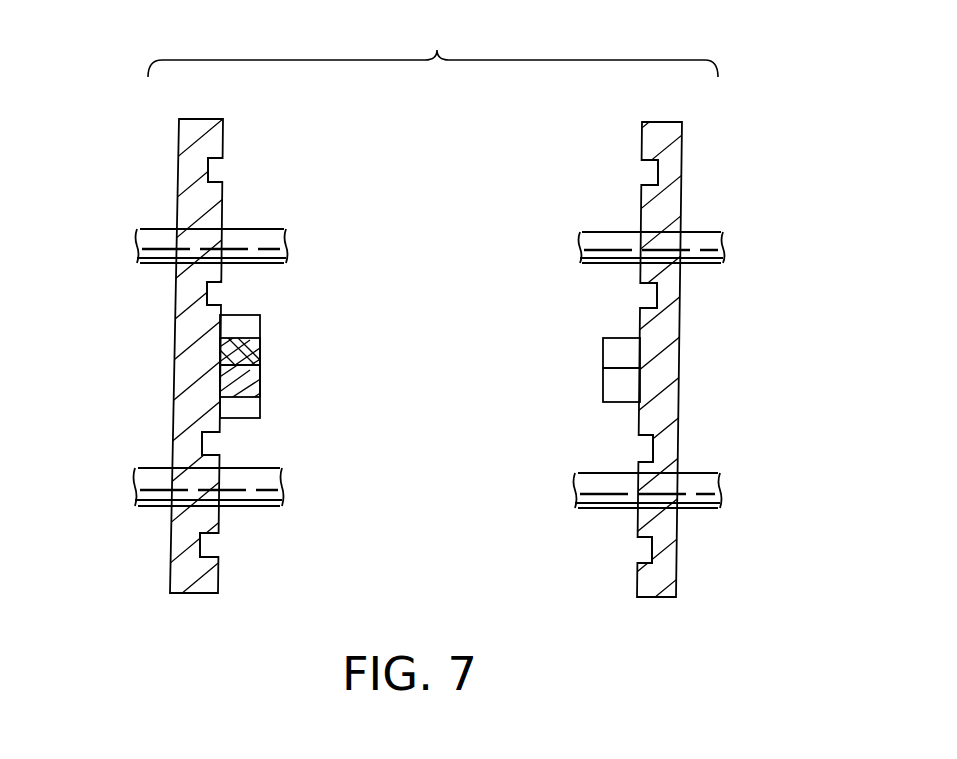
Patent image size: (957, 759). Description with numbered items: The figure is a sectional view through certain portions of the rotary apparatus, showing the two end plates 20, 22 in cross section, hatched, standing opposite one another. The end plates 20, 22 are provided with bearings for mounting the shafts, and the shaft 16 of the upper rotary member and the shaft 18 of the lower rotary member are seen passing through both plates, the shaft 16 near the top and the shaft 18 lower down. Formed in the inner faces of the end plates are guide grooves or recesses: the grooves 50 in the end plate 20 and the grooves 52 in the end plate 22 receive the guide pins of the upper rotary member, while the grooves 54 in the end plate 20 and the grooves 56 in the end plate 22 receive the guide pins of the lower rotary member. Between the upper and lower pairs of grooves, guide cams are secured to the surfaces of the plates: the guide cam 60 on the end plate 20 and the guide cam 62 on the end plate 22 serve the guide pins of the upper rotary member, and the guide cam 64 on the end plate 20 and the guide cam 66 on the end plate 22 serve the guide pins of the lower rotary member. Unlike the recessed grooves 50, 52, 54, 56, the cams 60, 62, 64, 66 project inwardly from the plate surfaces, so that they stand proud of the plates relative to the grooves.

The shaft 16 is at (158, 237).
The shaft 18 is at (152, 478).
The end plate 20 is at (672, 135).
The end plate 22 is at (190, 148).
The guide groove 50 is at (650, 172).
The guide groove 52 is at (215, 171).
The guide groove 54 is at (645, 448).
The guide groove 56 is at (212, 443).
The guide cam 60 is at (611, 351).
The guide cam 62 is at (262, 352).
The guide cam 64 is at (611, 386).
The guide cam 66 is at (262, 385).